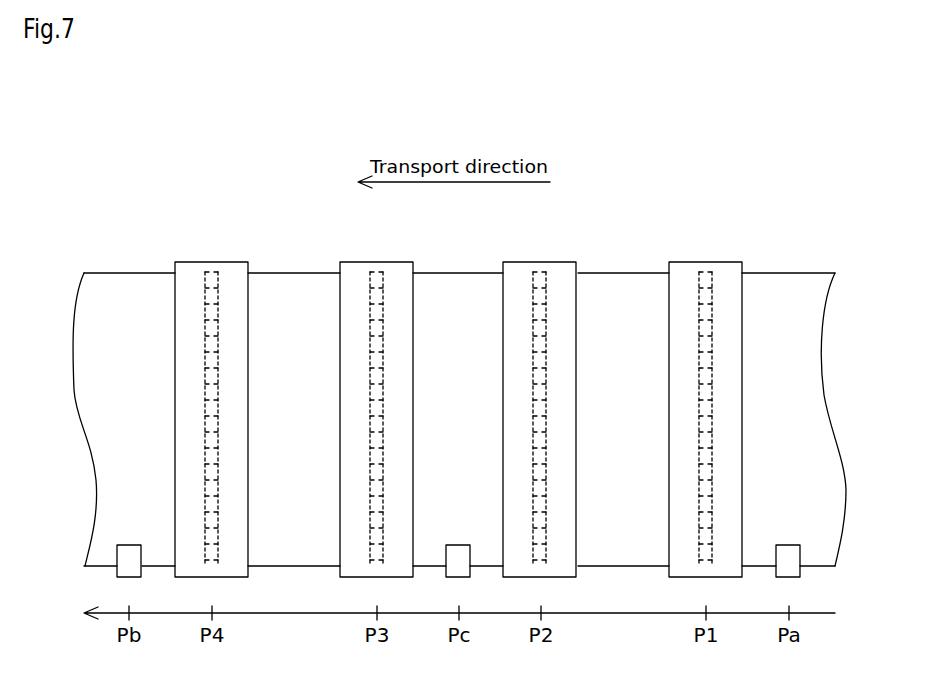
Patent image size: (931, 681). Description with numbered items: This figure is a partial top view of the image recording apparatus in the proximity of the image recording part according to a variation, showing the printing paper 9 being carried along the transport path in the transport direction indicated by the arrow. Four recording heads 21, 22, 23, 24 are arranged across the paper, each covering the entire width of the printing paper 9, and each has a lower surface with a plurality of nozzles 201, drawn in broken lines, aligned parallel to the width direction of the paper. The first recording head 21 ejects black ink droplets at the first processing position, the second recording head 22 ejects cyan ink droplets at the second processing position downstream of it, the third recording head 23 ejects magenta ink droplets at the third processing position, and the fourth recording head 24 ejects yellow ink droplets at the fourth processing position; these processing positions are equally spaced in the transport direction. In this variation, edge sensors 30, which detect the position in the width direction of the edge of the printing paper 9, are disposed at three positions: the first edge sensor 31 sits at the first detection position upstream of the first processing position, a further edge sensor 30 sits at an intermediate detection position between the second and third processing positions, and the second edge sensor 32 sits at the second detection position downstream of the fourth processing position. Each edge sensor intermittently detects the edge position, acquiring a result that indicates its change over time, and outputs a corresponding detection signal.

The printing paper 9 is at (786, 273).
The first recording head 21 is at (706, 262).
The second recording head 22 is at (540, 262).
The third recording head 23 is at (377, 262).
The fourth recording head 24 is at (212, 262).
The nozzles 201 is at (715, 313).
The edge sensor 30 is at (460, 545).
The first edge sensor 31 is at (790, 545).
The second edge sensor 32 is at (131, 545).